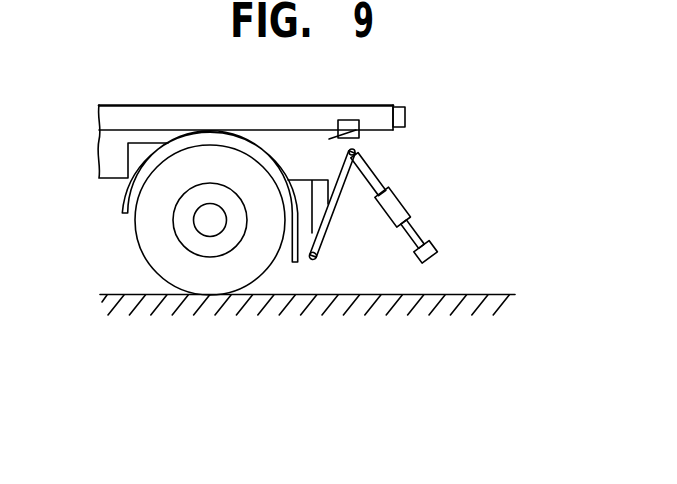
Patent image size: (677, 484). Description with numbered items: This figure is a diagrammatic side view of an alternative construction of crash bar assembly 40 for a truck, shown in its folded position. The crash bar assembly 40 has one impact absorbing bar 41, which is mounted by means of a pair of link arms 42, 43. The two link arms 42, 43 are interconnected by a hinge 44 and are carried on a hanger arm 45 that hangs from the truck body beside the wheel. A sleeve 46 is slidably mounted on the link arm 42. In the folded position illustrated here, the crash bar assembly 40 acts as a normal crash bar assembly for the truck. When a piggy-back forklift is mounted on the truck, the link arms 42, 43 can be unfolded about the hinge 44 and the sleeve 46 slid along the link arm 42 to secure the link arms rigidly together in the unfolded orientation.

The crash bar assembly 40 is at (488, 150).
The impact absorbing bar 41 is at (430, 245).
The link arm 42 is at (368, 173).
The link arm 43 is at (329, 226).
The hinge 44 is at (356, 150).
The hanger arm 45 is at (314, 204).
The sleeve 46 is at (397, 205).